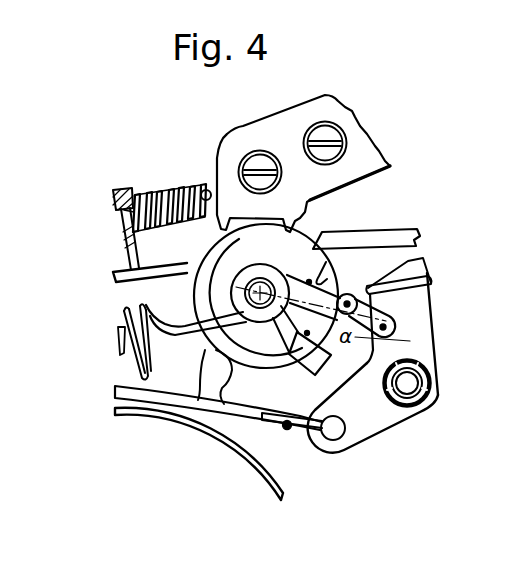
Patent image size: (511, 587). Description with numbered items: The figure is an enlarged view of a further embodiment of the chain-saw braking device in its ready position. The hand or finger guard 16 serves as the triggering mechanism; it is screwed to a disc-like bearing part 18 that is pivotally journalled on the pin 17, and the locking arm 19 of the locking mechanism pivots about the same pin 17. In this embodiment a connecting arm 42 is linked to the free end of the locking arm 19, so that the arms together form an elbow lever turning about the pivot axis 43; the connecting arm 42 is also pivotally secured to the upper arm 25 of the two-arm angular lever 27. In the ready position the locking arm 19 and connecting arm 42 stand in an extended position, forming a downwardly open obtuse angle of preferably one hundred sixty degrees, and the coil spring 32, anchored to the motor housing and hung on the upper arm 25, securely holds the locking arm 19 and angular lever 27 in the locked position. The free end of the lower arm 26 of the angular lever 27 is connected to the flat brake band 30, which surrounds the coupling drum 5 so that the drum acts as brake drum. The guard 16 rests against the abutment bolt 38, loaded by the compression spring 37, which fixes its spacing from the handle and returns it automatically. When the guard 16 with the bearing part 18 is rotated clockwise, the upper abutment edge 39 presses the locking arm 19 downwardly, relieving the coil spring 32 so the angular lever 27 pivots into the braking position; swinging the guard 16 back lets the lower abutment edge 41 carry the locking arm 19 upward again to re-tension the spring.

The hand or finger guard 16 is at (364, 133).
The compression spring 37 is at (153, 194).
The abutment bolt 38 is at (206, 189).
The bearing part 18 is at (300, 237).
The upper abutment edge 39 is at (333, 255).
The pivot axis 43 is at (345, 301).
The locking arm 19 is at (333, 290).
The connecting arm 42 is at (371, 314).
The upper arm 25 is at (418, 324).
The pin 17 is at (259, 292).
The coil spring 32 is at (121, 337).
The lower abutment edge 41 is at (298, 342).
The coupling drum 5 is at (261, 466).
The brake band 30 is at (260, 418).
The lower arm 26 is at (369, 430).
The angular lever 27 is at (413, 432).